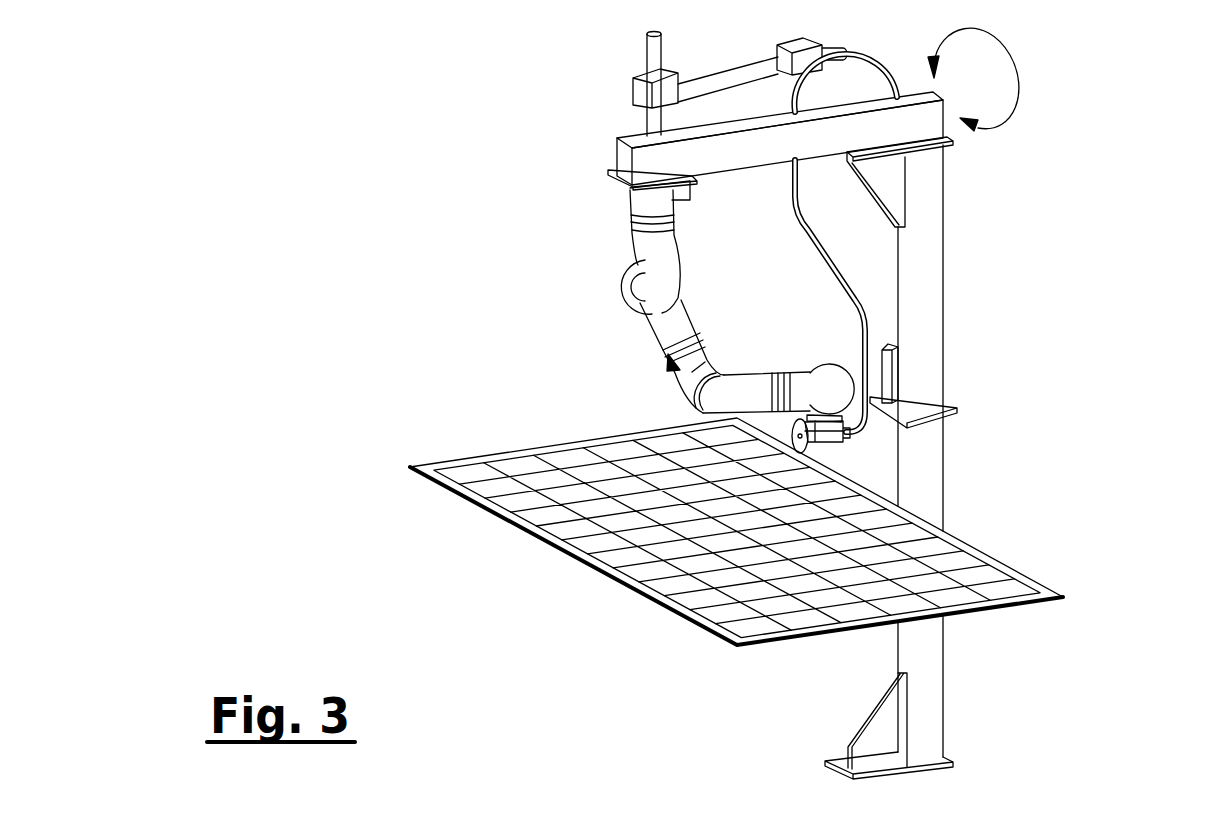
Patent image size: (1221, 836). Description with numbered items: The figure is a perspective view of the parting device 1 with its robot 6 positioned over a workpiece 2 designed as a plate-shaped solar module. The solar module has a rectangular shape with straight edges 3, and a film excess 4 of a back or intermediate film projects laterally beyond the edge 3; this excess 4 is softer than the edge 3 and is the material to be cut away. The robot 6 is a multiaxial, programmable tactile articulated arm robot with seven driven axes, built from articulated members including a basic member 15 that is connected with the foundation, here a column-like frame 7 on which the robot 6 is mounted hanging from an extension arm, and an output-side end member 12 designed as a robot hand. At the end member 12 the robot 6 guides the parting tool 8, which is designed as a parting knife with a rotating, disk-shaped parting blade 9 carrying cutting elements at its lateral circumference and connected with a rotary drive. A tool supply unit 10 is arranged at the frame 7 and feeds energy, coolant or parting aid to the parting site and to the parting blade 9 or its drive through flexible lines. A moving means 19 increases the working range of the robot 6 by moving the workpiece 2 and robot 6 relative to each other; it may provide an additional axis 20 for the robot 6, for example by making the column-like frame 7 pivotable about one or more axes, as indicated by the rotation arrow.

The parting device 1 is at (452, 230).
The workpiece 2 is at (658, 553).
The edge 3 is at (739, 531).
The excess 4 is at (963, 543).
The robot 6 is at (650, 332).
The frame 7 is at (932, 305).
The parting tool 8 is at (842, 449).
The parting blade 9 is at (807, 440).
The tool supply unit 10 is at (890, 392).
The end member 12 is at (828, 370).
The basic member 15 is at (643, 200).
The moving means 19 is at (910, 100).
The additional axis 20 is at (1006, 167).